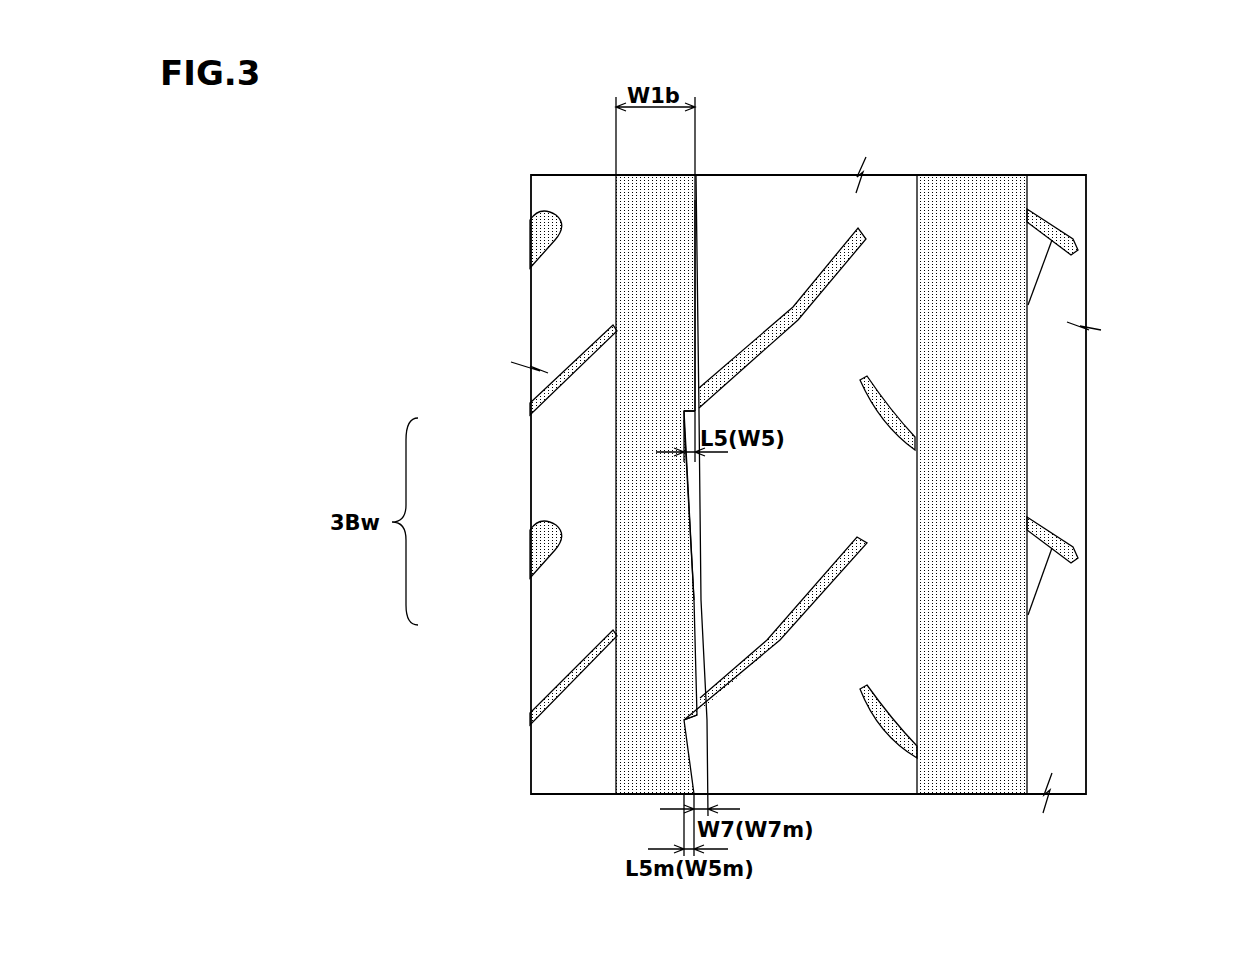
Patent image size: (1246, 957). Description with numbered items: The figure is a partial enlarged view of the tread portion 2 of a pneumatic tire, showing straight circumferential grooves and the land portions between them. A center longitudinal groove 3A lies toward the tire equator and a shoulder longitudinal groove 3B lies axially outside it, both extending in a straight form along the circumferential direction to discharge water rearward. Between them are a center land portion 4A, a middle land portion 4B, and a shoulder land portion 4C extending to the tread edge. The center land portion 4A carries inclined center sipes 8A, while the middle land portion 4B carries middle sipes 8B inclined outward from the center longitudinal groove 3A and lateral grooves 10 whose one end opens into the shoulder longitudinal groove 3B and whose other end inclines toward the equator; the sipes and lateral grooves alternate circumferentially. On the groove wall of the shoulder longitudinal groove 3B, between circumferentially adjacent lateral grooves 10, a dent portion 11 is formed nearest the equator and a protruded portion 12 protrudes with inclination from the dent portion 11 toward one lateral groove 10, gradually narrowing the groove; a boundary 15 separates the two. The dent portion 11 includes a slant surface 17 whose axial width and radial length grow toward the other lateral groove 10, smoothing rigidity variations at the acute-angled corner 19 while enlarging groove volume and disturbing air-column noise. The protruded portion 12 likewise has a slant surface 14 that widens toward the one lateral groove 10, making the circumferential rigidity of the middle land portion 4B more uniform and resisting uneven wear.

The tread portion 2 is at (1119, 167).
The center longitudinal groove 3A is at (967, 232).
The shoulder longitudinal groove 3B is at (657, 232).
The center land portion 4A is at (1067, 222).
The middle land portion 4B is at (801, 233).
The shoulder land portion 4C is at (580, 232).
The center sipe 8A is at (1053, 233).
The middle sipe 8B is at (890, 410).
The lateral groove 10 is at (752, 343).
The dent portion 11 is at (693, 302).
The protruded portion 12 is at (685, 438).
The slant surface 14 is at (690, 468).
The boundary 15 is at (693, 537).
The slant surface 17 is at (703, 347).
The acute-angled corner 19 is at (715, 662).